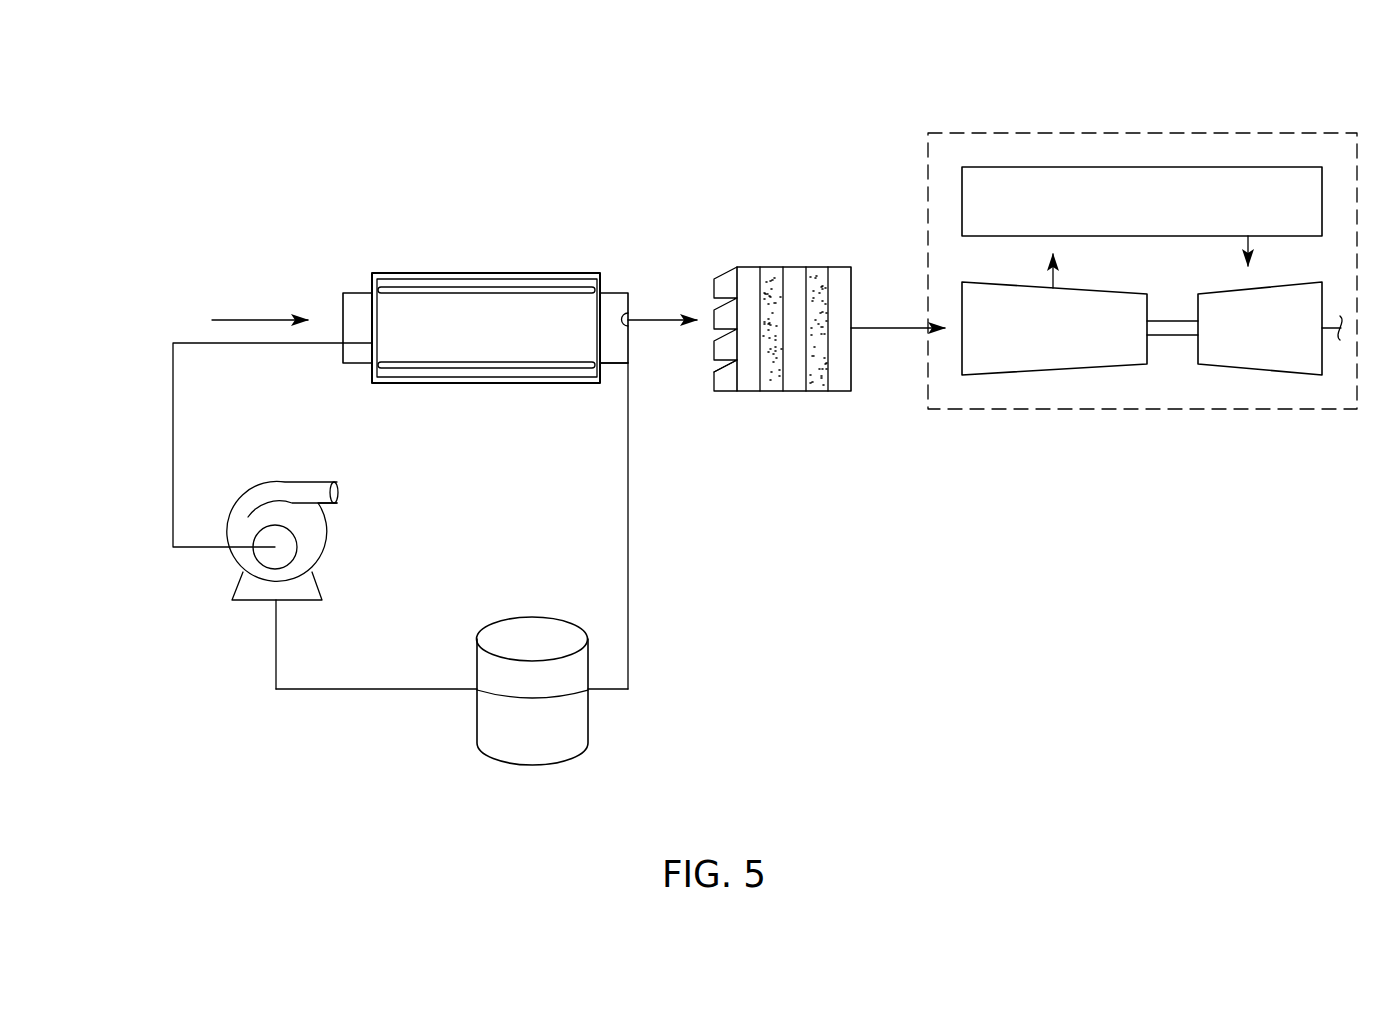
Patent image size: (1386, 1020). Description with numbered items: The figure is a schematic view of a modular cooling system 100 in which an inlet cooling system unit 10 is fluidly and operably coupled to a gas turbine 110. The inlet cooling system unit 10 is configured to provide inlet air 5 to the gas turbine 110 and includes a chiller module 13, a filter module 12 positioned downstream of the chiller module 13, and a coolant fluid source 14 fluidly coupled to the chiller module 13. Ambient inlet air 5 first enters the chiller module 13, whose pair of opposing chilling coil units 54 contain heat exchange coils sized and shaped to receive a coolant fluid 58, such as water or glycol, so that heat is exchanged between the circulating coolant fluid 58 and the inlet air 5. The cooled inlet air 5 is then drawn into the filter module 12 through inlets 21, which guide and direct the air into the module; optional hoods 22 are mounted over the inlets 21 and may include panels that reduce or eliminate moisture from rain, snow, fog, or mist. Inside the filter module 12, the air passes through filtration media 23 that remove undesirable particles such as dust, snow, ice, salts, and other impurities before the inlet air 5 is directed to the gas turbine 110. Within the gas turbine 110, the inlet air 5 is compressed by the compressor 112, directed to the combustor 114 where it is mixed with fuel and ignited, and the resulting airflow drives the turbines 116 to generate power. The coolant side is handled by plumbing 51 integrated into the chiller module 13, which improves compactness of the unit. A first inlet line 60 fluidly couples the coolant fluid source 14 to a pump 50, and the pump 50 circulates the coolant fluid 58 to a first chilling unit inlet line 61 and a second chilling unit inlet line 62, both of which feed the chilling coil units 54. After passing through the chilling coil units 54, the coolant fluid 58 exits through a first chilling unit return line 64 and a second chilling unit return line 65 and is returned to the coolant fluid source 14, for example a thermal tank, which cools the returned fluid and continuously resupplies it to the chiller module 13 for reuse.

The modular cooling system 100 is at (268, 113).
The inlet cooling system unit 10 is at (692, 580).
The inlet air 5 is at (212, 320).
The chiller module 13 is at (486, 318).
The chilling coil units 54 is at (505, 281).
The second chilling unit inlet line 62 is at (360, 292).
The first chilling unit inlet line 61 is at (352, 366).
The first chilling unit return line 64 is at (614, 292).
The second chilling unit return line 65 is at (613, 366).
The filter module 12 is at (768, 303).
The hoods 22 is at (728, 270).
The inlets 21 is at (726, 380).
The filtration media 23 is at (819, 267).
The gas turbine 110 is at (1142, 267).
The compressor 112 is at (1050, 375).
The combustor 114 is at (1140, 167).
The turbines 116 is at (1255, 375).
The plumbing 51 is at (146, 474).
The pump 50 is at (227, 563).
The first inlet line 60 is at (277, 652).
The coolant fluid 58 is at (338, 690).
The coolant fluid source 14 is at (477, 720).